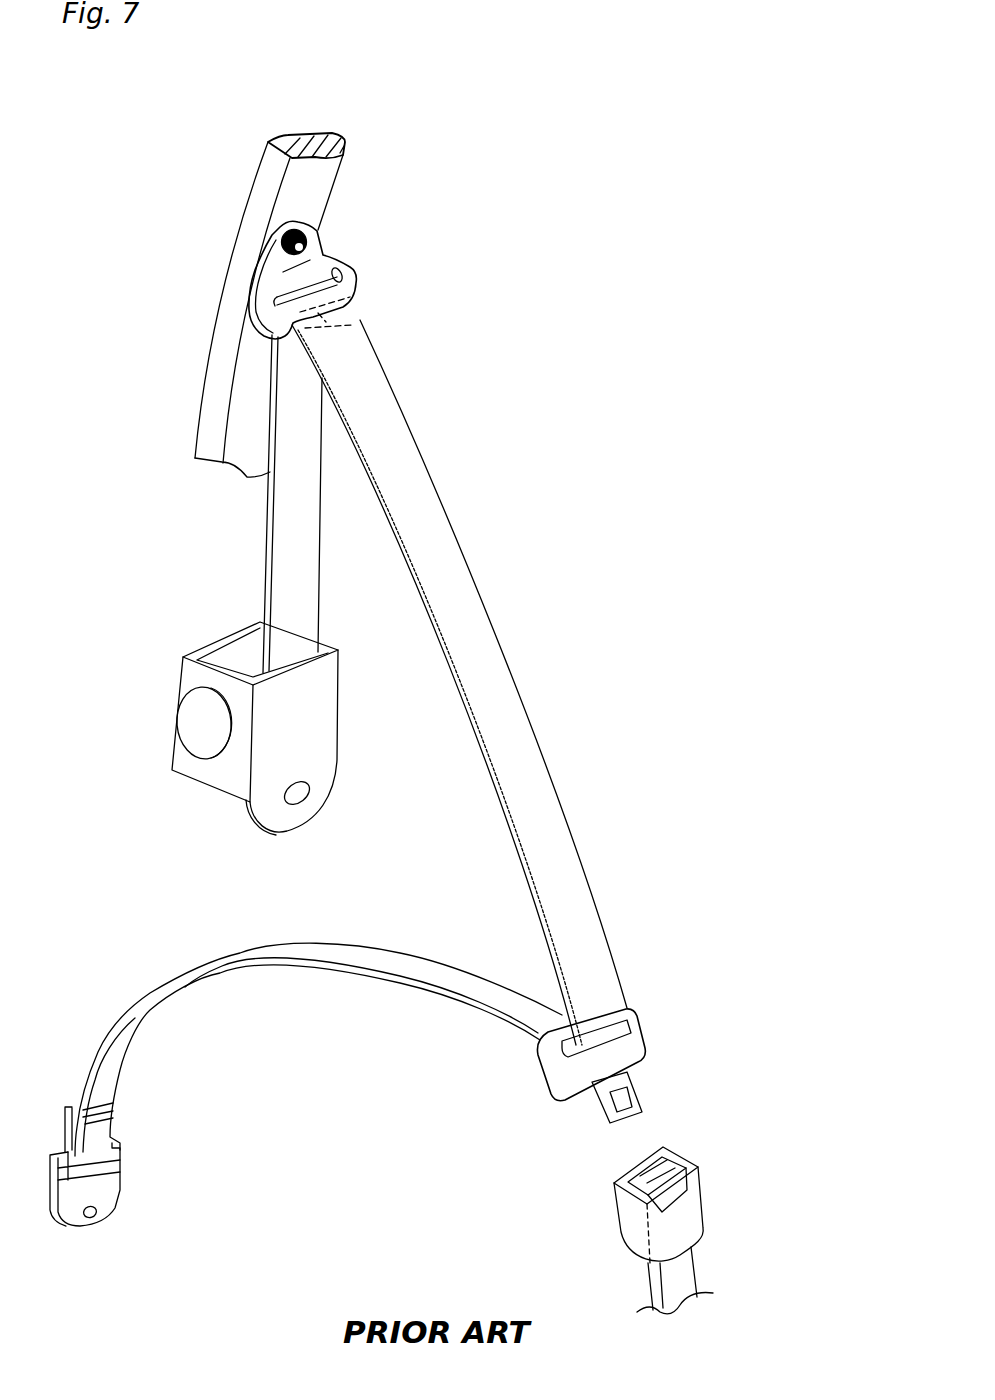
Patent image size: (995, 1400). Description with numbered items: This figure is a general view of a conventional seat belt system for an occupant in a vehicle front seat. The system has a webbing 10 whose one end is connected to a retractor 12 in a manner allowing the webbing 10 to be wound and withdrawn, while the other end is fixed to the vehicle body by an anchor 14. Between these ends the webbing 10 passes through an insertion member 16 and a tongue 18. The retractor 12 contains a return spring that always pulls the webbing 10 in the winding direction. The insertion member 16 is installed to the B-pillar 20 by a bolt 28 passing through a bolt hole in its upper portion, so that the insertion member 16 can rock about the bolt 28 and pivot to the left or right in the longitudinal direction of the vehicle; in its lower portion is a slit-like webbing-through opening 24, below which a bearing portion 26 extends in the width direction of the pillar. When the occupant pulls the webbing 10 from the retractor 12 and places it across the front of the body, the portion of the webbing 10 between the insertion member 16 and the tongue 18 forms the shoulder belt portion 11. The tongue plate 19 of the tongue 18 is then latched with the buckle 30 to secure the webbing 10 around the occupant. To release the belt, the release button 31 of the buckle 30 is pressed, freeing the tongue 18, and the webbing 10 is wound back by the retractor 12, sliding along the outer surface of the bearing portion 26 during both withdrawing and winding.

The webbing 10 is at (355, 738).
The shoulder belt portion 11 is at (537, 817).
The retractor 12 is at (203, 773).
The anchor 14 is at (100, 1200).
The insertion member 16 is at (307, 248).
The tongue 18 is at (609, 1064).
The tongue plate 19 is at (590, 1108).
The B-pillar 20 is at (265, 177).
The webbing-through opening 24 is at (340, 284).
The bearing portion 26 is at (360, 317).
The bolt 28 is at (283, 239).
The buckle 30 is at (662, 1230).
The release button 31 is at (680, 1192).